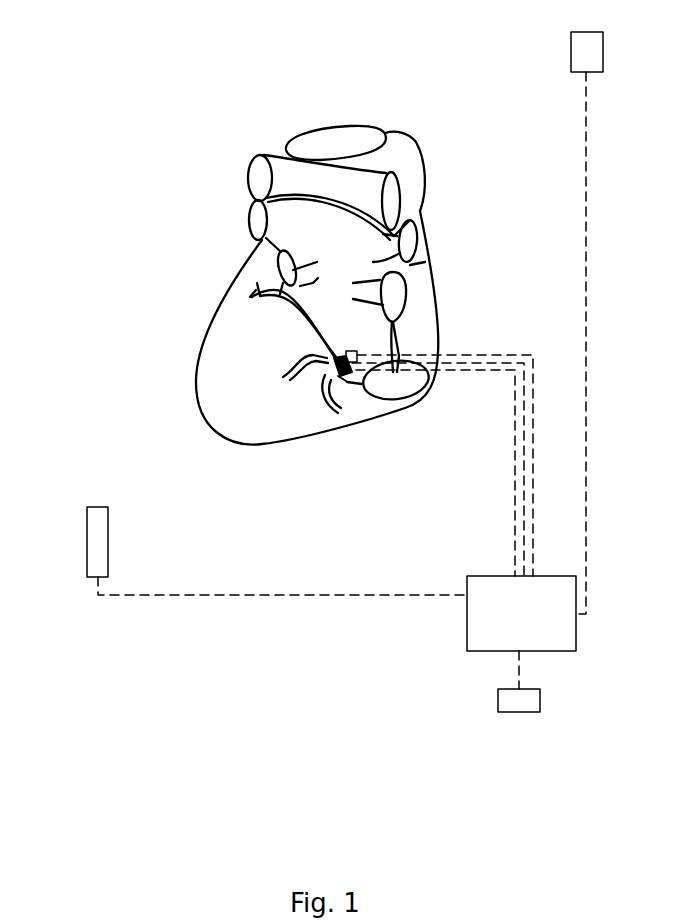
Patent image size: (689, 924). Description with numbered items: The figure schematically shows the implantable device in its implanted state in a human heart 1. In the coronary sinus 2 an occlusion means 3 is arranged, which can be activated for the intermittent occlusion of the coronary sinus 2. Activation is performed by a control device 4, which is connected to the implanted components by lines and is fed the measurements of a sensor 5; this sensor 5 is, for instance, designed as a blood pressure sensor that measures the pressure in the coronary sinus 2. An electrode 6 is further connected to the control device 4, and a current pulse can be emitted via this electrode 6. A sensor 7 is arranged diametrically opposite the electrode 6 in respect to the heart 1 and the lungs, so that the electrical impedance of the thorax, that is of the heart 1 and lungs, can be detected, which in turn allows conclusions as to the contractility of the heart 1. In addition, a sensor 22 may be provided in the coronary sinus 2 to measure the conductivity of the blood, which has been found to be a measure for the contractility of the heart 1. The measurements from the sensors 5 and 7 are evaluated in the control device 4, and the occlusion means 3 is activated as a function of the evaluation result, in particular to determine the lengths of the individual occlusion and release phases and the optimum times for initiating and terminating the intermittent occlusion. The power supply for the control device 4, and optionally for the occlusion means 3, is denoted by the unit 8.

The heart 1 is at (210, 333).
The coronary sinus 2 is at (313, 338).
The occlusion means 3 is at (343, 380).
The control device 4 is at (475, 626).
The sensor 5 is at (325, 373).
The electrode 6 is at (94, 533).
The sensor 7 is at (600, 49).
The power supply 8 is at (505, 699).
The sensor 22 is at (357, 351).